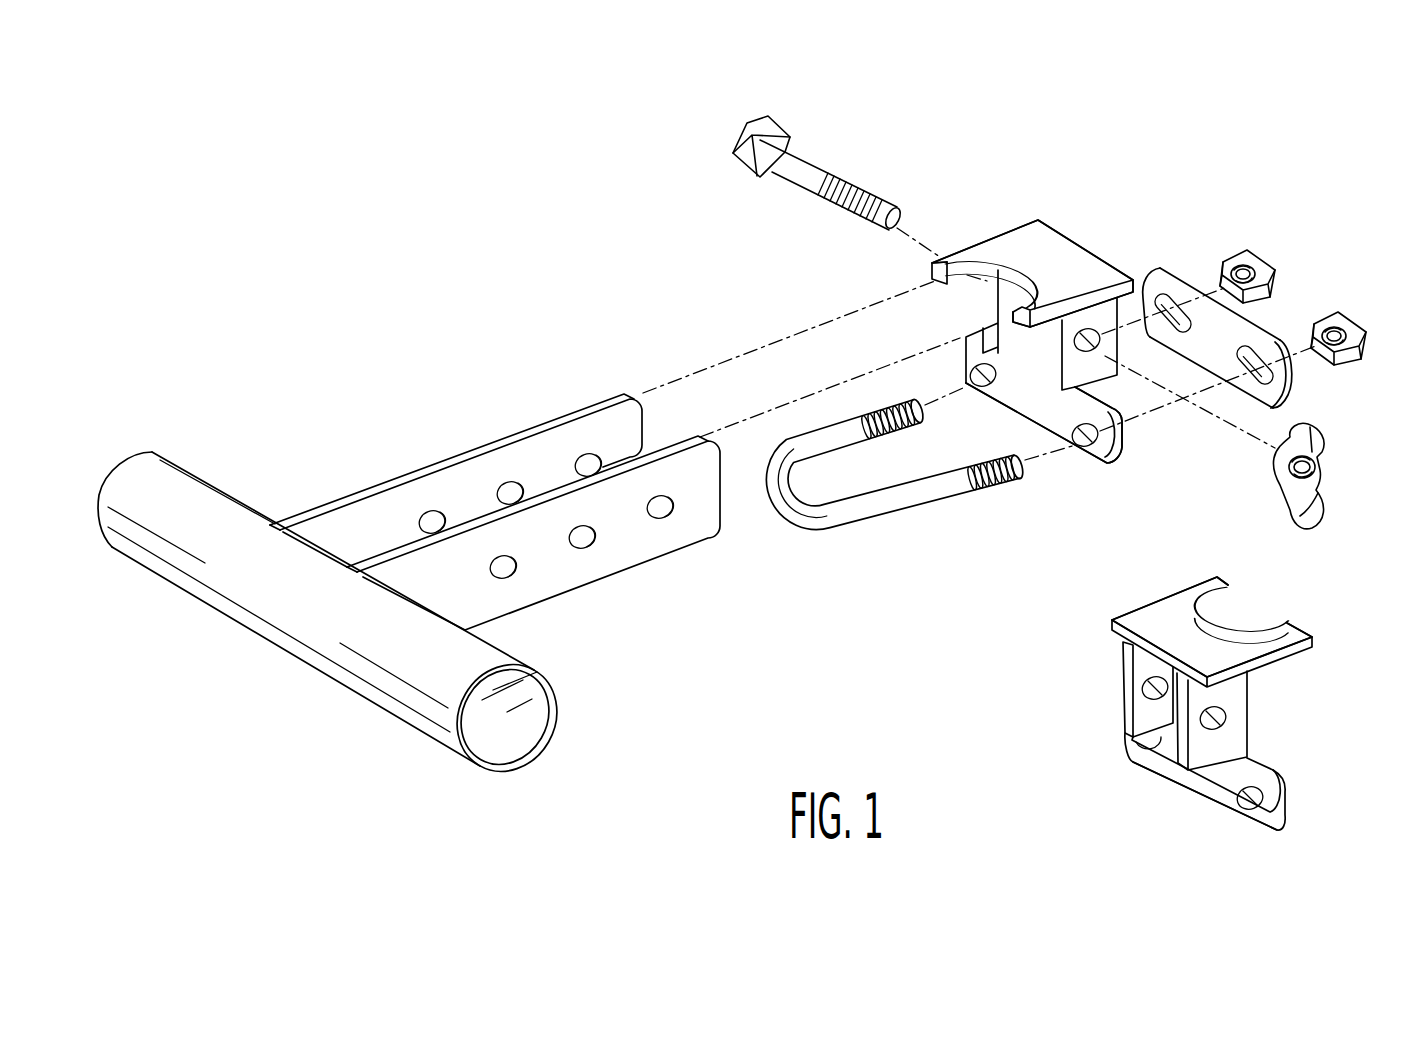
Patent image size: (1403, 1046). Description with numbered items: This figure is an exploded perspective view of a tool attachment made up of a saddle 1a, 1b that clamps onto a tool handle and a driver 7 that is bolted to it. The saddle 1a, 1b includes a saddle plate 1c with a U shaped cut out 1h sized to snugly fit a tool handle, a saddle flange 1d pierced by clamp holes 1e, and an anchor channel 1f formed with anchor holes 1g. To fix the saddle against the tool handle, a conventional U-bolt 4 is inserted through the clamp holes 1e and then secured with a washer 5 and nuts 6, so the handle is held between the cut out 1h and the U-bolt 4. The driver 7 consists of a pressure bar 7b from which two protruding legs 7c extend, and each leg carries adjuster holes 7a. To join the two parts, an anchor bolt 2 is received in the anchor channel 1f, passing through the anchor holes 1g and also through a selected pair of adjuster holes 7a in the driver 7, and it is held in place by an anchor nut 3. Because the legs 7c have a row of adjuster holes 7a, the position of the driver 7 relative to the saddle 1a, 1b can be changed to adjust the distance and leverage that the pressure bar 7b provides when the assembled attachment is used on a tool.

The saddle 1a is at (1078, 226).
The saddle 1b is at (1122, 700).
The saddle plate 1c is at (1090, 244).
The saddle flange 1d is at (1122, 442).
The clamp holes 1e is at (1082, 452).
The anchor channel 1f is at (1100, 378).
The anchor holes 1g is at (1098, 342).
The U shaped cut out 1h is at (975, 285).
The anchor bolt 2 is at (803, 170).
The anchor nut 3 is at (1322, 508).
The U-bolt 4 is at (907, 513).
The washer 5 is at (1263, 328).
The nuts 6 is at (1338, 312).
The driver 7 is at (347, 696).
The adjuster holes 7a is at (588, 463).
The pressure bar 7b is at (233, 626).
The protruding legs 7c is at (524, 432).